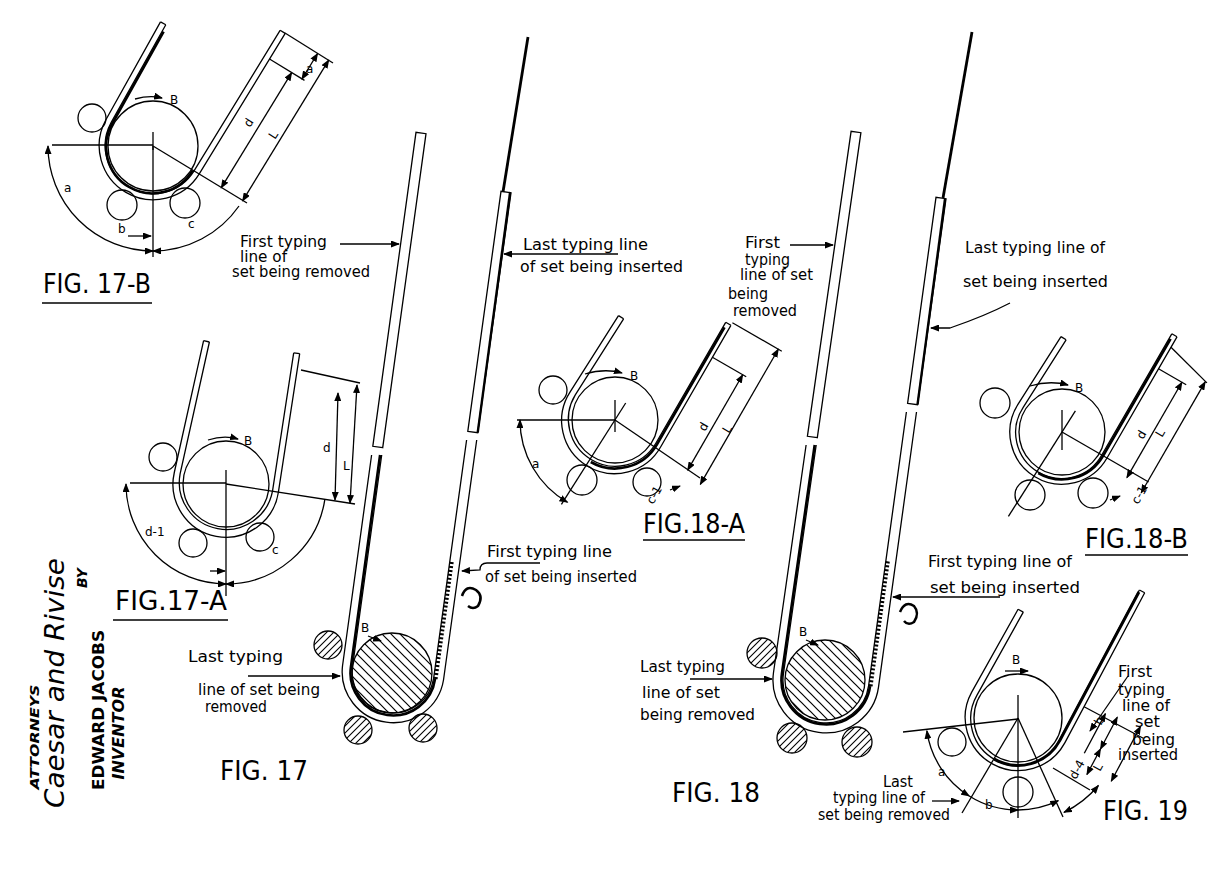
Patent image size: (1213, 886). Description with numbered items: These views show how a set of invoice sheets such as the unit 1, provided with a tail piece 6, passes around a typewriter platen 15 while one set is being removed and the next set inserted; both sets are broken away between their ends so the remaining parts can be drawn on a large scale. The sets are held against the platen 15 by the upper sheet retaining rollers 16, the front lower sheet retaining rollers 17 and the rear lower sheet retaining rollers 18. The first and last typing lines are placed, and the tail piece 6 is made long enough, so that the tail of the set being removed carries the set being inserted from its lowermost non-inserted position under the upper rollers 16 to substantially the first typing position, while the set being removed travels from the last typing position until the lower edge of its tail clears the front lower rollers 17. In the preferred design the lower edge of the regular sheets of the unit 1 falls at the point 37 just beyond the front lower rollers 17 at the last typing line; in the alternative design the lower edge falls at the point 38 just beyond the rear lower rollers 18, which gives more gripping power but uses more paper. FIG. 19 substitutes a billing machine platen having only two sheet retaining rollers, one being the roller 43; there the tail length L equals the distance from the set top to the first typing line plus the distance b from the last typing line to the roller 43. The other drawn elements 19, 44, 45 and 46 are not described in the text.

In FIG. 19, the unit of invoice sheets 1 is at (1027, 628).
In FIG. 19, the tail piece 6 is at (1088, 739).
In FIG. 17, the platen 15 is at (410, 636).
In FIG. 18, the platen 15 is at (852, 647).
In FIG. 17, the upper sheet retaining rollers 16 is at (325, 630).
In FIG. 18, the upper sheet retaining rollers 16 is at (764, 640).
In FIG. 17, the front lower sheet retaining rollers 17 is at (364, 745).
In FIG. 18, the front lower sheet retaining rollers 17 is at (800, 753).
In FIG. 17, the rear lower sheet retaining rollers 18 is at (430, 744).
In FIG. 18, the rear lower sheet retaining rollers 18 is at (849, 757).
In FIG. 17, the set being inserted 19 is at (446, 678).
In FIG. 18, the set being inserted 19 is at (884, 692).
In FIG. 17-B, the point 37 is at (149, 166).
In FIG. 17-A, the point 37 is at (219, 533).
In FIG. 18-A, the point 38 is at (645, 462).
In FIG. 18-B, the point 38 is at (1087, 475).
In FIG. 19, the sheet retaining roller 43 is at (1025, 806).
In FIG. 19, the feed roller 44 is at (949, 730).
In FIG. 19, the platen 45 is at (1060, 677).
In FIG. 19, the set being removed 46 is at (1027, 763).